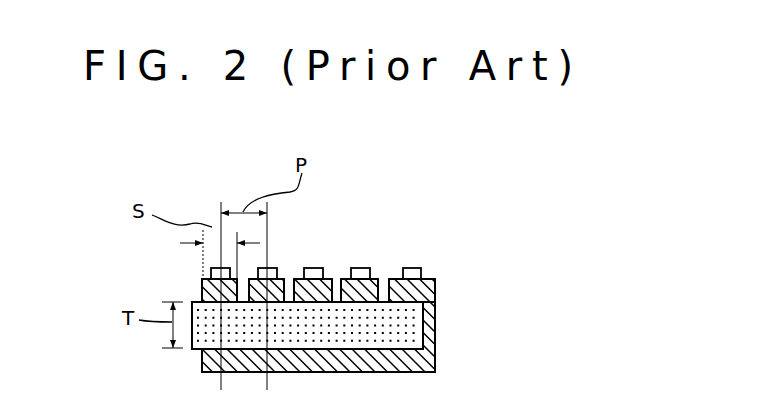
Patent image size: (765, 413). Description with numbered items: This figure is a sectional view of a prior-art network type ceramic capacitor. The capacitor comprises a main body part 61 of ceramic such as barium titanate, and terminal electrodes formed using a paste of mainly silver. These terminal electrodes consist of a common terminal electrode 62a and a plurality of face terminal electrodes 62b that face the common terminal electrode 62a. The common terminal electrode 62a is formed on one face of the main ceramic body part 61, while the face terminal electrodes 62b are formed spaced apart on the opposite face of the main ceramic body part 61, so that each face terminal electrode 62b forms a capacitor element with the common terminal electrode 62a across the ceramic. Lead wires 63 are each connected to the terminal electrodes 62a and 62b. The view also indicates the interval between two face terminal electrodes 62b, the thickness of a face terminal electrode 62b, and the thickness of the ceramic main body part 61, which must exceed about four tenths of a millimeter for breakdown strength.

The main body part 61 is at (412, 317).
The common terminal electrode 62a is at (428, 349).
The face terminal electrodes 62b is at (325, 292).
The lead wires 63 is at (414, 270).